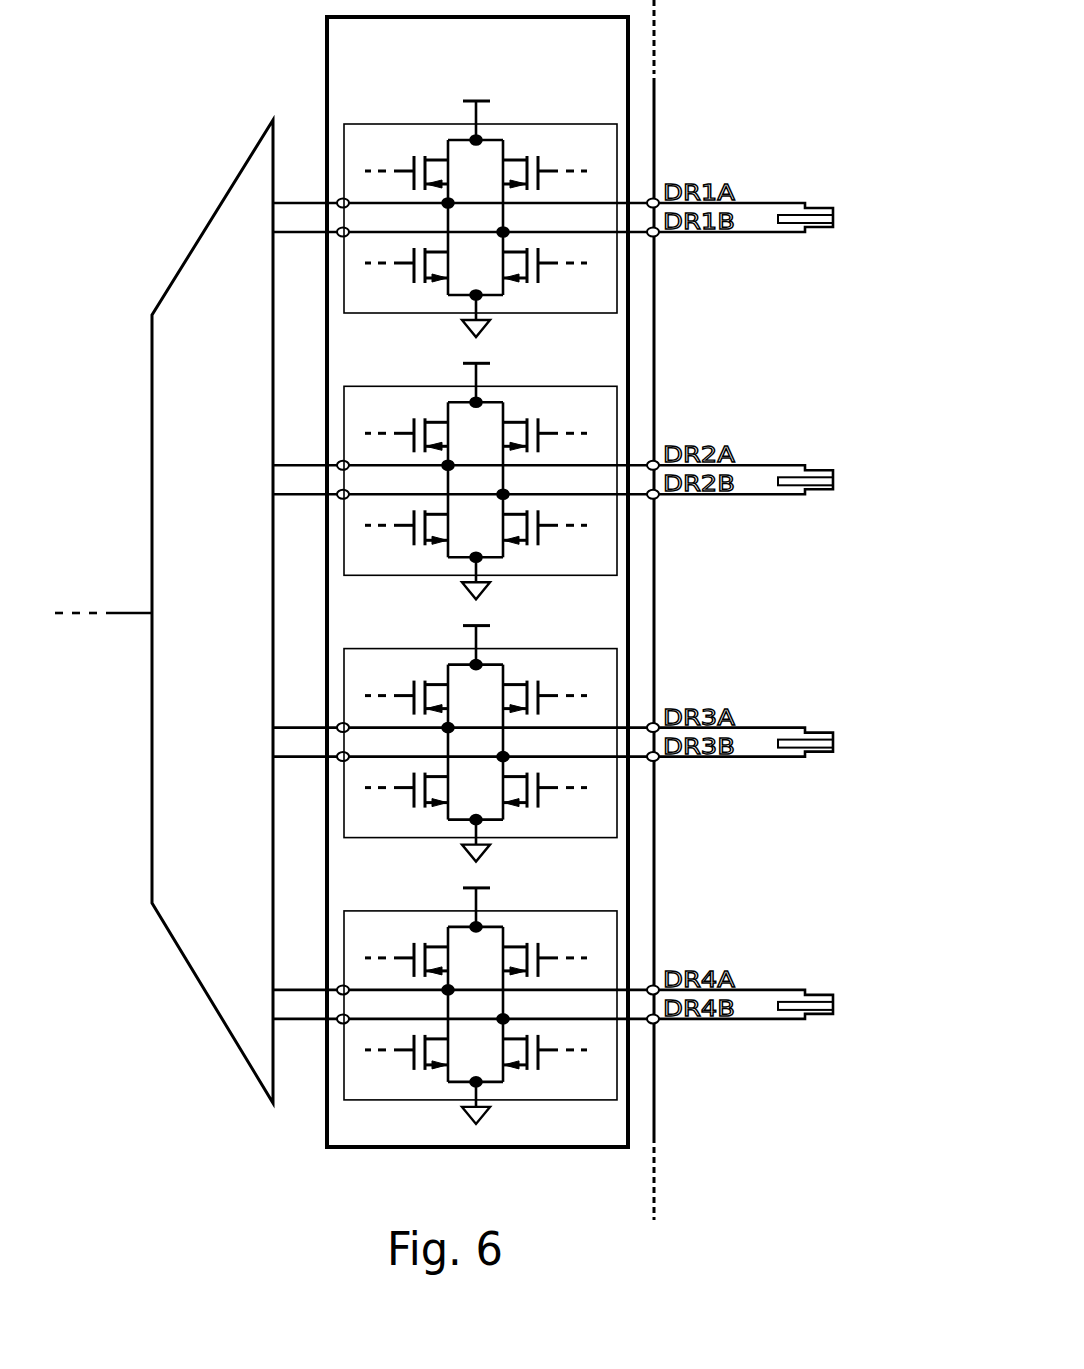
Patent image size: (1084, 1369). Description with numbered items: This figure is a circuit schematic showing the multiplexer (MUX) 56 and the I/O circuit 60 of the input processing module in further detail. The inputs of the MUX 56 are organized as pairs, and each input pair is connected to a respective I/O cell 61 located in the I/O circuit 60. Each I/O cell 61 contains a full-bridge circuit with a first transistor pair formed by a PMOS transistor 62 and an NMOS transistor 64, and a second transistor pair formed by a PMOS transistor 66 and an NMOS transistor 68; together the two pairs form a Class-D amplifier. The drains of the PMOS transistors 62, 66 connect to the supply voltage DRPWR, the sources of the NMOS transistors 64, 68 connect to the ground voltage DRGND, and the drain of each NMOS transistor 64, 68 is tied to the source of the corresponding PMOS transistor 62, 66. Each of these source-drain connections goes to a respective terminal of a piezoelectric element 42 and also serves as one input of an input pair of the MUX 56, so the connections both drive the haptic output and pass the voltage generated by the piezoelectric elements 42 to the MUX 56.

The I/O circuit 60 is at (396, 65).
The I/O cell 61 is at (381, 155).
The PMOS transistor 62 is at (413, 180).
The NMOS transistor 64 is at (412, 268).
The PMOS transistor 66 is at (542, 164).
The NMOS transistor 68 is at (542, 268).
The multiplexer 56 is at (152, 681).
The piezoelectric element 42 is at (836, 219).